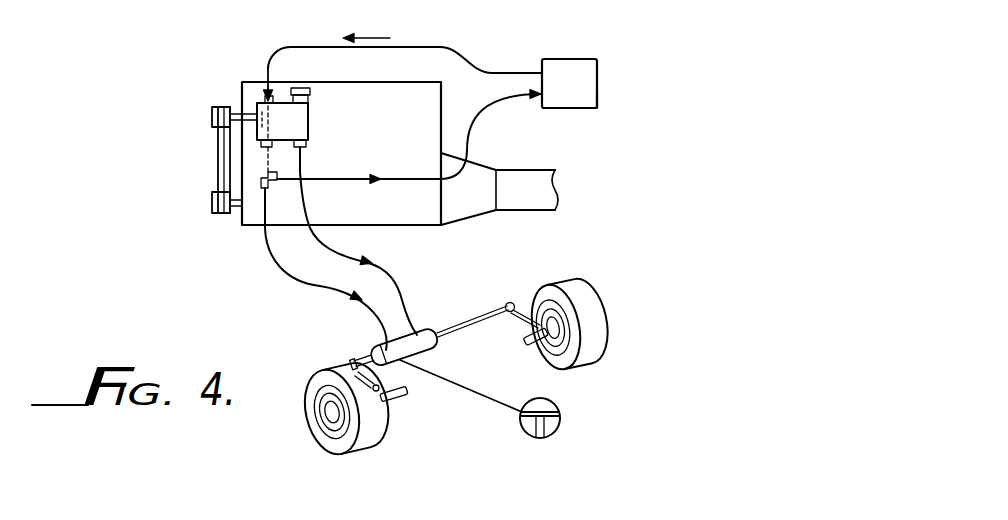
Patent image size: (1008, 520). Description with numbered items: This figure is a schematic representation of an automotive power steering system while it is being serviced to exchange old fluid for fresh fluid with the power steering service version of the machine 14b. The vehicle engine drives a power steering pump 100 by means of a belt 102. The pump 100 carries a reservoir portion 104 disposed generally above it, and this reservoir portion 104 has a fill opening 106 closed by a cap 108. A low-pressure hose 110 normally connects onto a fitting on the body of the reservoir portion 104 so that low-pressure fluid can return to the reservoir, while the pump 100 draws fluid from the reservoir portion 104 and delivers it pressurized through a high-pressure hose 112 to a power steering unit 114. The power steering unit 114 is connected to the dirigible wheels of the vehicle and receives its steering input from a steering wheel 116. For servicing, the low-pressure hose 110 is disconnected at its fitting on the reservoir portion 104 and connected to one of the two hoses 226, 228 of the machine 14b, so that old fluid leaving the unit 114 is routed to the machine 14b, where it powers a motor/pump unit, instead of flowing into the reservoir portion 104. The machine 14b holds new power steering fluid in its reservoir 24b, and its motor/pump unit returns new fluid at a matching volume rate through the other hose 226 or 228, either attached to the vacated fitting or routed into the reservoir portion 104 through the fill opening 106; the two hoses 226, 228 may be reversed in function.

The power steering pump 100 is at (248, 98).
The belt 102 is at (218, 159).
The reservoir portion 104 is at (310, 130).
The fill opening 106 is at (297, 62).
The cap 108 is at (323, 67).
The low-pressure hose 110 is at (326, 290).
The high-pressure hose 112 is at (405, 291).
The power steering unit 114 is at (368, 345).
The steering wheel 116 is at (560, 413).
The power steering service version of the machine 14b is at (597, 73).
The reservoir of the machine 24b is at (606, 101).
The machine hose 226 is at (345, 181).
The machine hose 228 is at (316, 47).